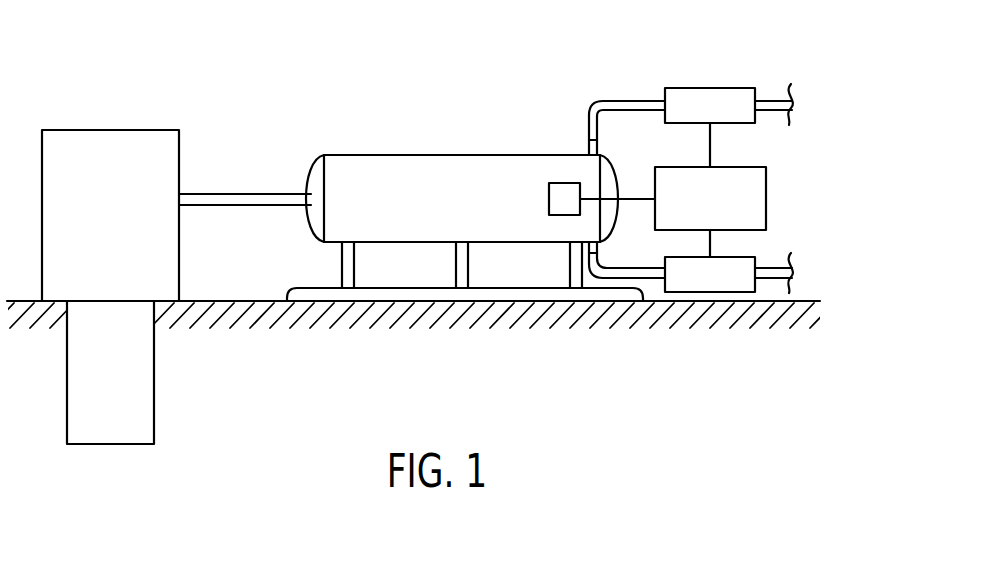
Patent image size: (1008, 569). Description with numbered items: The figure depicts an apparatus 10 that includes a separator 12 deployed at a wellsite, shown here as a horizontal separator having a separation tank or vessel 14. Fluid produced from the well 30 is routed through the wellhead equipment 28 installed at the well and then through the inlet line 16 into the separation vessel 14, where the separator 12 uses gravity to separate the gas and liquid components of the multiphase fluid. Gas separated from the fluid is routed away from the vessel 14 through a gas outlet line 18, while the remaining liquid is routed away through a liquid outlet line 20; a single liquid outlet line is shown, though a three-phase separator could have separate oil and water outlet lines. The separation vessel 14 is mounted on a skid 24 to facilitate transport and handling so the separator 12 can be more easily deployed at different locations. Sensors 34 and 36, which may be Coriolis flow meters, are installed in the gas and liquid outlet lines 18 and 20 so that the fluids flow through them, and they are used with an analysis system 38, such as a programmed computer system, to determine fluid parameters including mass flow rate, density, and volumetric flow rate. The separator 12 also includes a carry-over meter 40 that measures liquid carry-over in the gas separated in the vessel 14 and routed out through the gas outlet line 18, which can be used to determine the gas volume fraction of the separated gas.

The apparatus 10 is at (141, 33).
The separator 12 is at (342, 115).
The separation vessel 14 is at (460, 155).
The inlet line 16 is at (243, 194).
The gas outlet line 18 is at (612, 101).
The liquid outlet line 20 is at (645, 268).
The skid 24 is at (307, 288).
The wellhead equipment 28 is at (110, 130).
The well 30 is at (154, 372).
The sensor 34 is at (712, 88).
The sensor 36 is at (755, 261).
The analysis system 38 is at (766, 196).
The carry-over meter 40 is at (549, 200).